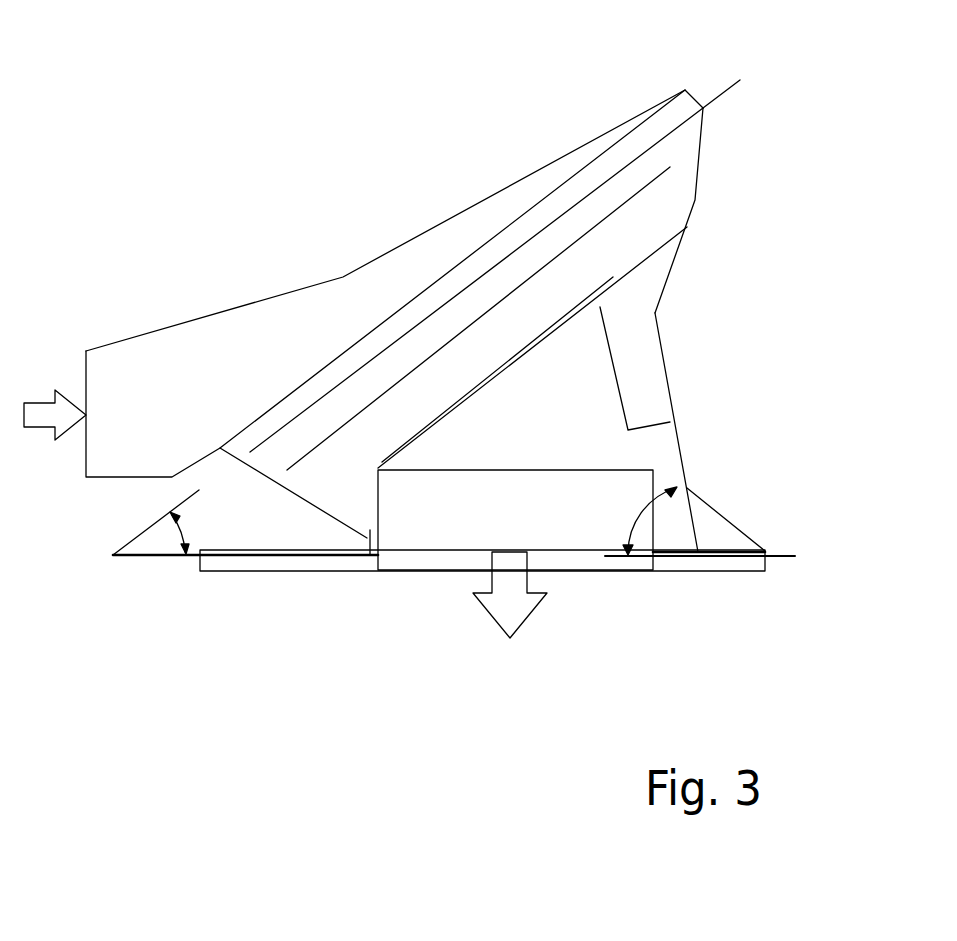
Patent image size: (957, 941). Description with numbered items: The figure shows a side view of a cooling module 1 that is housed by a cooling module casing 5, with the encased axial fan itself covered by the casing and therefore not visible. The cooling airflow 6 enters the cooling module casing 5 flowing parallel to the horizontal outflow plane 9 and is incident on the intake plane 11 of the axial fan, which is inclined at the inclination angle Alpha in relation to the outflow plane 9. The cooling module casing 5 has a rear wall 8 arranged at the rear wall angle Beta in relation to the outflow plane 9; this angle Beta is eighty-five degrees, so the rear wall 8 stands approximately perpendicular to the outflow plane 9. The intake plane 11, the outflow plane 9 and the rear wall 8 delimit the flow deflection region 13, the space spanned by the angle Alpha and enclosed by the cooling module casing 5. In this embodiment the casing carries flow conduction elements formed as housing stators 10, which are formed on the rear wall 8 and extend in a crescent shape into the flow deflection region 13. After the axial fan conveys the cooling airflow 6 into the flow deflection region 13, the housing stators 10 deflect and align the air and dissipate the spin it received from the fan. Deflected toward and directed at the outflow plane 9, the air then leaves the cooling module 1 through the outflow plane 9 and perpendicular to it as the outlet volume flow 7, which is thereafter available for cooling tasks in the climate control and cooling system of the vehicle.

The cooling module 1 is at (350, 234).
The cooling module casing 5 is at (703, 110).
The cooling airflow 6 is at (40, 413).
The outlet volume flow 7 is at (525, 613).
The rear wall 8 is at (678, 442).
The outflow plane 9 is at (285, 558).
The housing stator 10 is at (637, 328).
The intake plane 11 is at (722, 93).
The flow deflection region 13 is at (573, 385).
The inclination angle Alpha is at (175, 535).
The rear wall angle Beta is at (643, 515).